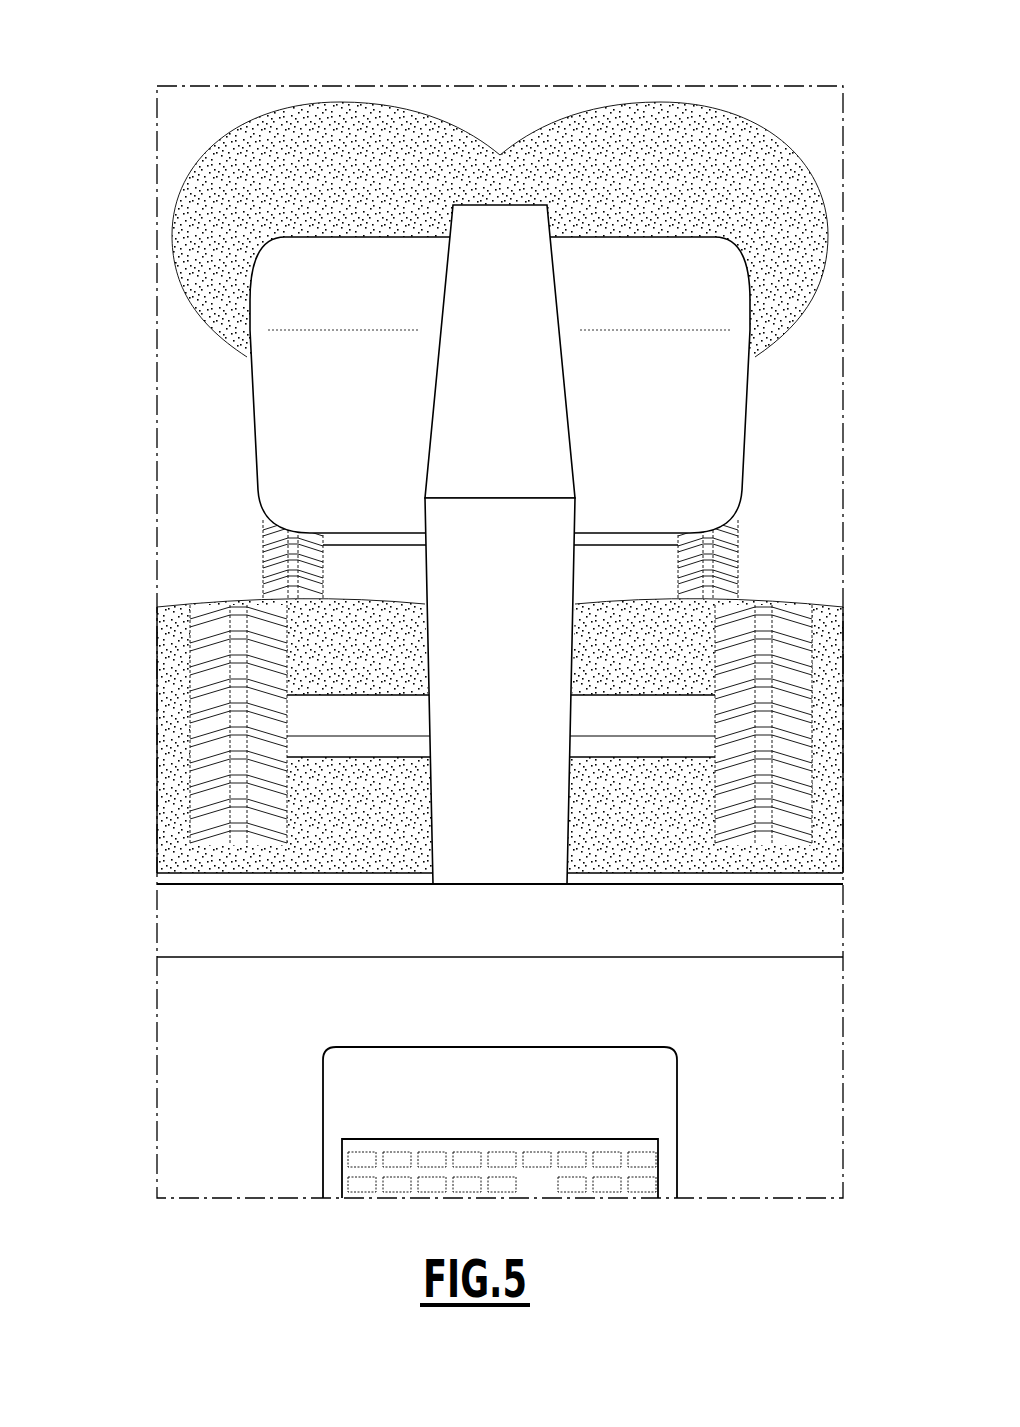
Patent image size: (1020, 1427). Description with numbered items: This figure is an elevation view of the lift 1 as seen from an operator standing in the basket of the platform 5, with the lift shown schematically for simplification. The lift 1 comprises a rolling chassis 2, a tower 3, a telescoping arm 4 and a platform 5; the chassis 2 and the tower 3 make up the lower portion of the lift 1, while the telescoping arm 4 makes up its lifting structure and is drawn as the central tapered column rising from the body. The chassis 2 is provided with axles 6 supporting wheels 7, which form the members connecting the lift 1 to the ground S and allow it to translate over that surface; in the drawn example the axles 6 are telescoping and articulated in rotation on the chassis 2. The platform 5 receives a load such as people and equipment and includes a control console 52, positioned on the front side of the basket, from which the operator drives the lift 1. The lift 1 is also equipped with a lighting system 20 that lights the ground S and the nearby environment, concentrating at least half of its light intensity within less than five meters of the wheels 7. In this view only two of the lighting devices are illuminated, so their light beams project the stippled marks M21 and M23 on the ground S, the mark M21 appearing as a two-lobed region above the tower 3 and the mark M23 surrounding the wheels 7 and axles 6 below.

The lift 1 is at (186, 57).
The lighting system 20 is at (527, 315).
The mark M21 is at (643, 152).
The rolling chassis 2 is at (627, 538).
The tower 3 is at (712, 423).
The telescoping arm 4 is at (515, 393).
The ground S is at (196, 530).
The axles 6 is at (683, 712).
The mark M23 is at (170, 730).
The wheels 7 is at (803, 795).
The platform 5 is at (790, 921).
The control console 52 is at (337, 1232).